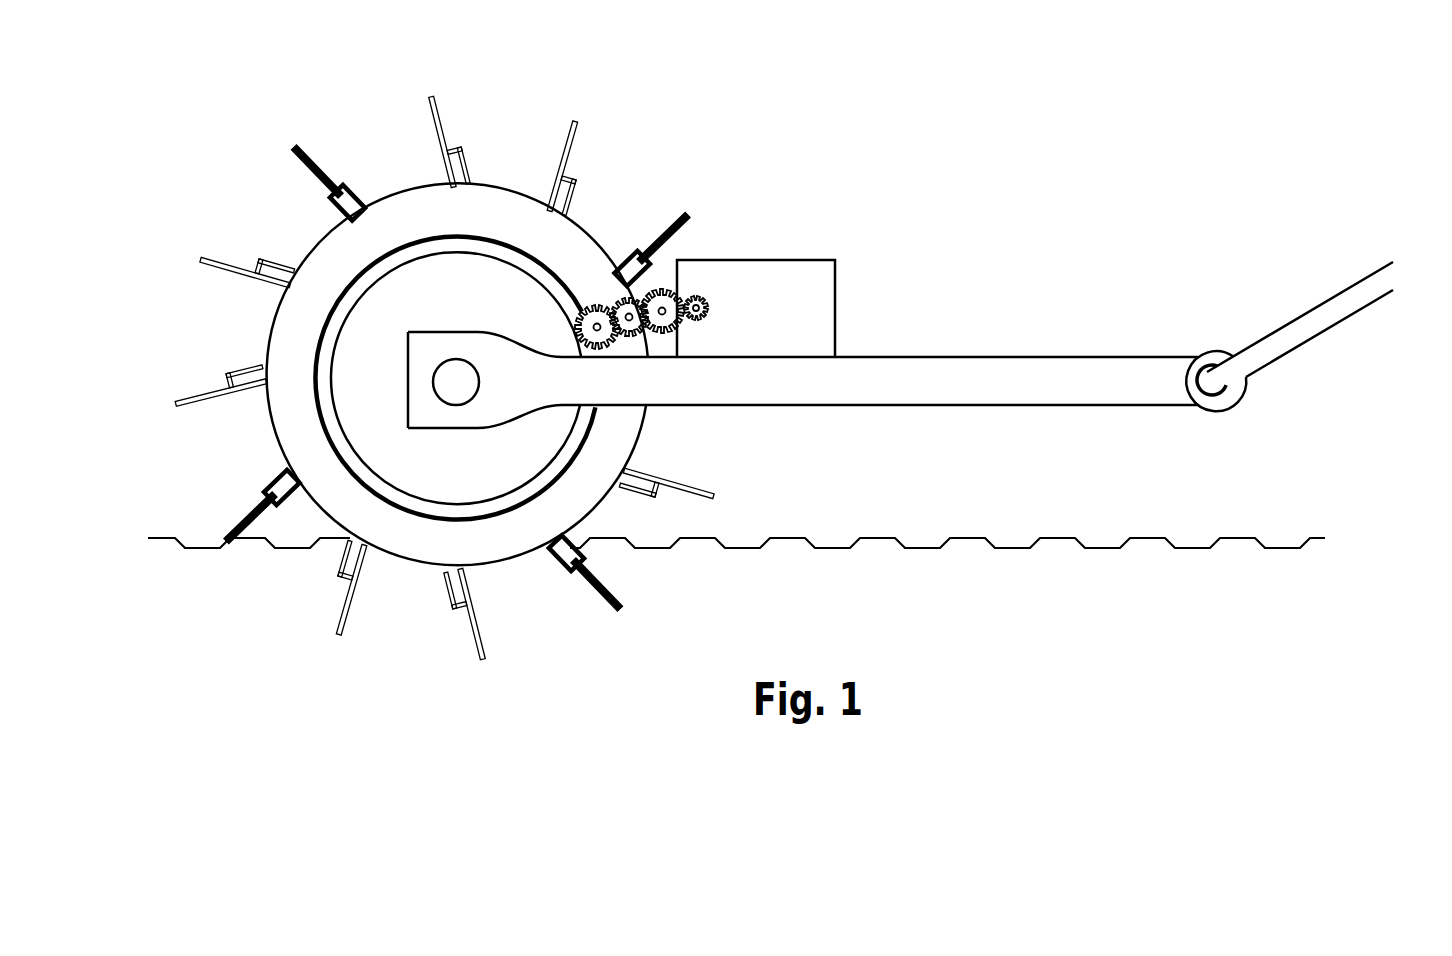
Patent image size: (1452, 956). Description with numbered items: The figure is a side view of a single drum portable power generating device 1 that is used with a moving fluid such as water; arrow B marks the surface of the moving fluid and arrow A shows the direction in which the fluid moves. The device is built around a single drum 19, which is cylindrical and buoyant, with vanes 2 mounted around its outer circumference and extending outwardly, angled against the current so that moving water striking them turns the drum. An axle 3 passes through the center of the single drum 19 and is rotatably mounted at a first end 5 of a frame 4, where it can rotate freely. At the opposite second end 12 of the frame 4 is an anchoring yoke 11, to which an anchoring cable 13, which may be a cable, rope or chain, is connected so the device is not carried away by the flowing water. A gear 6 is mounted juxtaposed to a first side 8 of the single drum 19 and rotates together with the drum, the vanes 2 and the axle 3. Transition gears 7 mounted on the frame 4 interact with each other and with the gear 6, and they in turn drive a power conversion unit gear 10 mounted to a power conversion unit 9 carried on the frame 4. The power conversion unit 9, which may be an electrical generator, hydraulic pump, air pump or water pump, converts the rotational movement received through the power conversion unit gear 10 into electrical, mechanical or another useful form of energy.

The single drum portable power generating device 1 is at (670, 110).
The vanes 2 is at (430, 133).
The axle 3 is at (440, 393).
The frame 4 is at (1062, 367).
The first end of the frame 5 is at (433, 337).
The gear 6 is at (490, 243).
The transition gear 7 is at (593, 303).
The first side of the single drum 8 is at (337, 504).
The power conversion unit 9 is at (822, 318).
The power conversion unit gear 10 is at (698, 300).
The anchoring yoke 11 is at (1188, 408).
The second end of the frame 12 is at (1245, 434).
The anchoring cable 13 is at (1294, 318).
The single drum 19 is at (613, 432).
The direction of fluid movement A is at (704, 569).
The surface of the moving fluid B is at (968, 526).